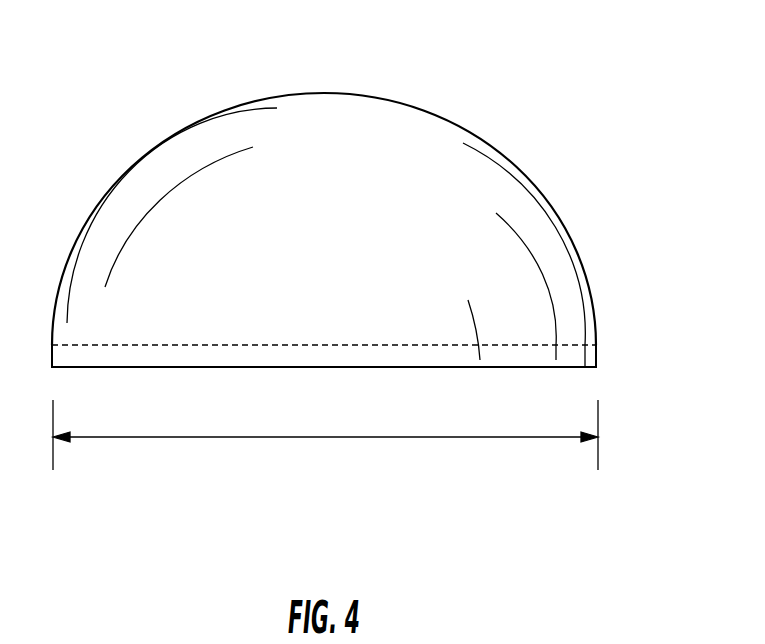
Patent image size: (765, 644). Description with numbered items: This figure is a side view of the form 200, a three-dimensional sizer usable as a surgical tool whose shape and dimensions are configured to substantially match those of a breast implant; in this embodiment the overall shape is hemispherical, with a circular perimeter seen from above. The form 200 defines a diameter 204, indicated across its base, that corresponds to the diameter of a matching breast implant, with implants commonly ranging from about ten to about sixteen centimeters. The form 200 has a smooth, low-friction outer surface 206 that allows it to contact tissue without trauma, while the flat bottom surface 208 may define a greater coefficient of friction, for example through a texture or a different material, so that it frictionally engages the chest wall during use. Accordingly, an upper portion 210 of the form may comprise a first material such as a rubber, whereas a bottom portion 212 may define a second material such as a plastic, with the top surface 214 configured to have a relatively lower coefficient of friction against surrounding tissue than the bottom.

The form 200 is at (162, 88).
The diameter 204 is at (338, 438).
The outer surface 206 is at (289, 250).
The bottom surface 208 is at (265, 368).
The upper portion 210 is at (582, 280).
The bottom portion 212 is at (598, 353).
The top surface 214 is at (397, 100).